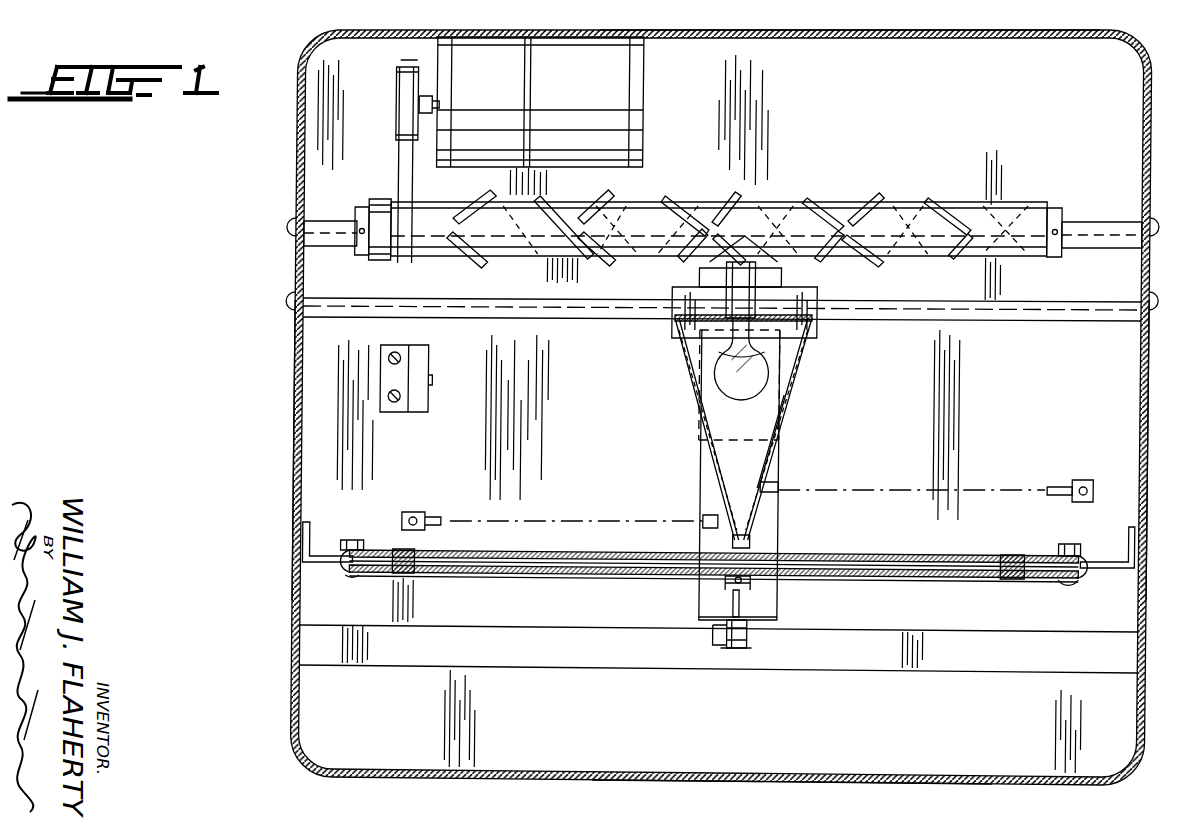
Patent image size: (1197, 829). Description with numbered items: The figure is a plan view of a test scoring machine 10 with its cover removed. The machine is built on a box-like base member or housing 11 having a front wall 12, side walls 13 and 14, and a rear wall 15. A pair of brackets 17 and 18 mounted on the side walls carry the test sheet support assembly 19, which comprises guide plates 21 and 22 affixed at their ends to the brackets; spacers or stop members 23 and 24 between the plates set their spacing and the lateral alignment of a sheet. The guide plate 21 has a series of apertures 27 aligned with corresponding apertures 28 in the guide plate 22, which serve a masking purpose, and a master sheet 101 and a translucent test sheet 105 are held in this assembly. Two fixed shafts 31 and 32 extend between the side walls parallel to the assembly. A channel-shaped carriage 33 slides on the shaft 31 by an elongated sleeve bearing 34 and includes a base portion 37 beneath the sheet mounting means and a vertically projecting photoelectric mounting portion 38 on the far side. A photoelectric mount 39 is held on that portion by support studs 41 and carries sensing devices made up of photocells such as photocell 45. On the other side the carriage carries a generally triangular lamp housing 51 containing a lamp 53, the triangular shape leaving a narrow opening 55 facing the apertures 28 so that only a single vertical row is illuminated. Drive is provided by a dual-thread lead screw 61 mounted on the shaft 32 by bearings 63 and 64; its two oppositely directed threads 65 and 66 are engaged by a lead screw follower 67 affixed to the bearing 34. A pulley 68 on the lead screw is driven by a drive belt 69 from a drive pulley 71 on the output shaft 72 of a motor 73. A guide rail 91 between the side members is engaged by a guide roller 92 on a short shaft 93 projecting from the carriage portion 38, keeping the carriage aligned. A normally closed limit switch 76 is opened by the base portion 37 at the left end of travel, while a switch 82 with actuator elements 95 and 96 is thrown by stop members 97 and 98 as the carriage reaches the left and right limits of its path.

The test scoring machine 10 is at (252, 333).
The base member or housing 11 is at (1147, 190).
The front wall 12 is at (838, 782).
The side wall 13 is at (300, 440).
The side wall 14 is at (1148, 435).
The rear wall 15 is at (852, 31).
The bracket 17 is at (323, 557).
The bracket 18 is at (1120, 570).
The test sheet support assembly 19 is at (714, 557).
The guide plate 21 is at (470, 574).
The guide plate 22 is at (486, 550).
The spacer or stop member 23 is at (400, 552).
The spacer or stop member 24 is at (1014, 557).
The apertures 27 is at (607, 578).
The apertures 28 is at (614, 549).
The fixed shaft 31 is at (1118, 320).
The fixed shaft 32 is at (1098, 230).
The carriage 33 is at (801, 452).
The elongated sleeve bearing 34 is at (812, 328).
The base portion 37 is at (698, 440).
The photoelectric mounting portion 38 is at (783, 612).
The photoelectric mount 39 is at (731, 586).
The support studs 41 is at (746, 600).
The photocell 45 is at (738, 580).
The lamp housing 51 is at (785, 400).
The lamp 53 is at (758, 300).
The opening 55 is at (757, 544).
The dual-thread lead screw 61 is at (996, 208).
The bearing 63 is at (362, 210).
The bearing 64 is at (1054, 208).
The thread 65 is at (824, 204).
The thread 66 is at (874, 205).
The lead screw follower 67 is at (741, 205).
The pulley 68 is at (382, 199).
The drive belt 69 is at (402, 95).
The drive pulley 71 is at (418, 62).
The output shaft 72 is at (436, 104).
The motor 73 is at (525, 60).
The limit switch 76 is at (420, 352).
The switch 82 is at (760, 524).
The guide rail 91 is at (530, 658).
The guide roller 92 is at (754, 638).
The short shaft 93 is at (719, 635).
The actuator element 95 is at (708, 520).
The actuator element 96 is at (785, 483).
The stop member 97 is at (428, 512).
The stop member 98 is at (1088, 480).
The master sheet 101 is at (952, 556).
The test sheet 105 is at (878, 580).